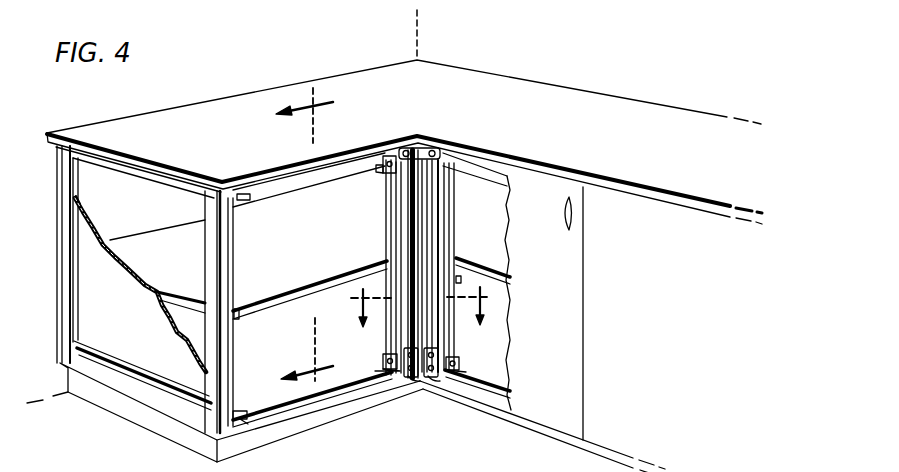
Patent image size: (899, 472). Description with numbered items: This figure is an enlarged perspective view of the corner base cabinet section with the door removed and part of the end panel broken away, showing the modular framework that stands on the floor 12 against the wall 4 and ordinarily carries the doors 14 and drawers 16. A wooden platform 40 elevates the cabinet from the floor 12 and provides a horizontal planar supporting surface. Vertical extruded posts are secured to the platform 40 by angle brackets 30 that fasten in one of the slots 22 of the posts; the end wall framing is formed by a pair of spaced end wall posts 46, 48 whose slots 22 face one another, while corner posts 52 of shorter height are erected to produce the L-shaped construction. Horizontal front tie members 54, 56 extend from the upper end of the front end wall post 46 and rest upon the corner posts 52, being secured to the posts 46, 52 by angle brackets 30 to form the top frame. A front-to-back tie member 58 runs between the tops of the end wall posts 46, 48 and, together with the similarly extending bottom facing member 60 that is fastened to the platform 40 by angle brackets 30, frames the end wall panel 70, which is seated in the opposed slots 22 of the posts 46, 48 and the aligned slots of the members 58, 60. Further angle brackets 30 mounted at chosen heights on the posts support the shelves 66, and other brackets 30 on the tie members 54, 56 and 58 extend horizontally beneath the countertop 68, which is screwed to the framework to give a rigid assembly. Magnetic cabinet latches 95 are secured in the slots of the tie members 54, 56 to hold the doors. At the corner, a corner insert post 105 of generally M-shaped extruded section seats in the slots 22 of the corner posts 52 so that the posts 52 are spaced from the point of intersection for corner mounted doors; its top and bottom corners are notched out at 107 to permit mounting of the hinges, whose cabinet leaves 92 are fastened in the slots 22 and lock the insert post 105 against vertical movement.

The wall 4 is at (453, 46).
The floor 12 is at (466, 464).
The doors 14 is at (552, 410).
The drawers 16 is at (421, 316).
The slots 22 is at (78, 200).
The angle brackets 30 is at (243, 417).
The wooden platform 40 is at (249, 438).
The front end wall post 46 is at (72, 173).
The back end wall post 48 is at (214, 377).
The corner posts 52 is at (392, 217).
The front tie member 54 is at (333, 167).
The front tie member 56 is at (502, 173).
The front-to-back tie member 58 is at (150, 182).
The bottom facing member 60 is at (145, 386).
The shelves 66 is at (277, 284).
The countertop 68 is at (610, 118).
The end wall panels 70 is at (118, 282).
The cabinet leaf 92 is at (433, 144).
The magnetic cabinet latches 95 is at (238, 198).
The corner insert post 105 is at (430, 383).
The notch 107 is at (391, 153).